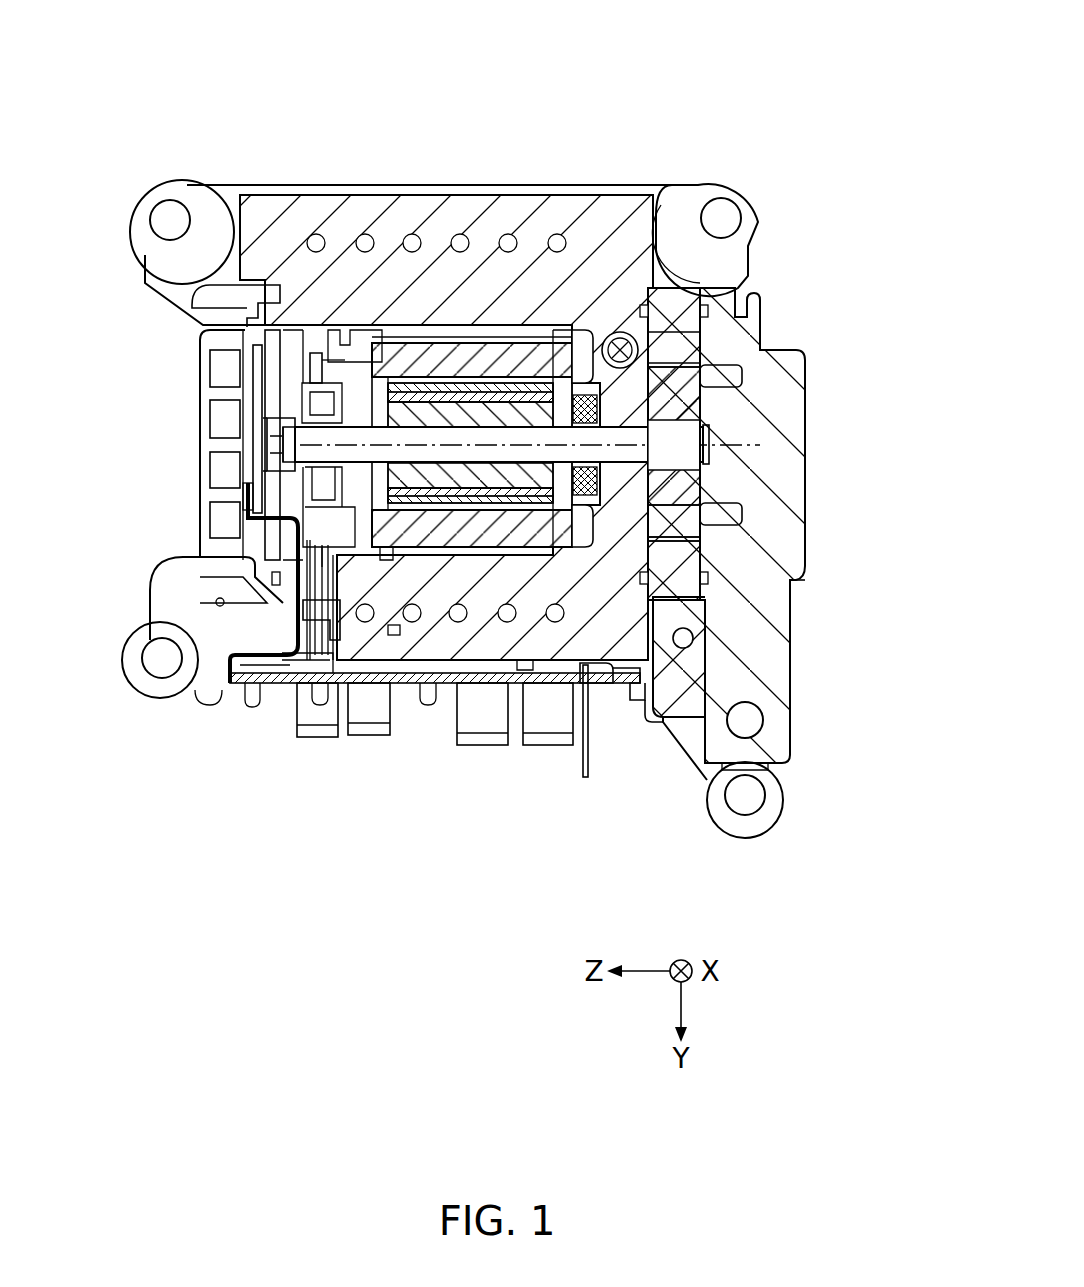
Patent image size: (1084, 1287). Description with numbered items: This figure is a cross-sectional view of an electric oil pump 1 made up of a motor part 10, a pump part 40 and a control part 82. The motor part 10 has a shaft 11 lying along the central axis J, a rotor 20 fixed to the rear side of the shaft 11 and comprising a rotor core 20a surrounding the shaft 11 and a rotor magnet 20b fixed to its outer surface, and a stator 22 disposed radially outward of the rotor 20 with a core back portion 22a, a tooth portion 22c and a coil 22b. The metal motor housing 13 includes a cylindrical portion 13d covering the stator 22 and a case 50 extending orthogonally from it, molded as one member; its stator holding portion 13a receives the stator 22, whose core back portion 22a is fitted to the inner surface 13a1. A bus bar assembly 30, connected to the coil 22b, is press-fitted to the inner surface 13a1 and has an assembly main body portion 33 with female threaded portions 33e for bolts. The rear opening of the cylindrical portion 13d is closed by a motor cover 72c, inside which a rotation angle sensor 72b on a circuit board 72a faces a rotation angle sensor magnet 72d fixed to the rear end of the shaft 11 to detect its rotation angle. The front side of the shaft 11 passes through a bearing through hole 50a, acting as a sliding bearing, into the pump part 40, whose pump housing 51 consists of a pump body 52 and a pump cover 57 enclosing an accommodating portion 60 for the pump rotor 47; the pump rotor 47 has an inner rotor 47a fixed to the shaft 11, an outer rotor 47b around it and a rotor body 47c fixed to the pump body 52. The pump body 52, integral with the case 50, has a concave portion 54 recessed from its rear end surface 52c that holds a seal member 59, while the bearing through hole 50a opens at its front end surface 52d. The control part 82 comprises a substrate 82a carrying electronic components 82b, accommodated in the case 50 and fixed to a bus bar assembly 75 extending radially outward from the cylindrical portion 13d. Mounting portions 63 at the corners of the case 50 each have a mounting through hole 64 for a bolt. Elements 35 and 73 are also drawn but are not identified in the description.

The electric oil pump 1 is at (698, 106).
The motor part 10 is at (540, 312).
The shaft 11 is at (700, 433).
The motor housing 13 is at (280, 180).
The stator holding portion 13a is at (490, 663).
The inner surface 13a1 is at (532, 700).
The cylindrical portion 13d is at (455, 330).
The rotor 20 is at (418, 368).
The rotor core 20a is at (437, 398).
The rotor magnet 20b is at (507, 312).
The stator 22 is at (563, 322).
The core back portion 22a is at (395, 632).
The coil 22b is at (352, 330).
The tooth portion 22c is at (452, 688).
The bus bar assembly 30 is at (312, 325).
The assembly main body portion 33 is at (296, 510).
The female threaded portion 33e is at (310, 528).
The terminal 35 is at (300, 370).
The pump part 40 is at (754, 522).
The pump rotor 47 is at (705, 415).
The inner rotor 47a is at (690, 515).
The outer rotor 47b is at (690, 535).
The rotor body 47c is at (695, 590).
The case 50 is at (627, 215).
The bearing through hole 50a is at (650, 433).
The pump housing 51 is at (788, 673).
The pump body 52 is at (693, 678).
The end surface 52c is at (595, 683).
The front end surface 52d is at (690, 565).
The concave portion 54 is at (620, 345).
The pump cover 57 is at (780, 635).
The seal member 59 is at (755, 300).
The accommodating portion 60 is at (648, 700).
The mounting portion 63 is at (148, 198).
The mounting through hole 64 is at (170, 203).
The circuit board 72a is at (260, 408).
The rotation angle sensor 72b is at (278, 440).
The motor cover 72c is at (205, 492).
The rotation angle sensor magnet 72d is at (277, 450).
The connector 73 is at (315, 640).
The bus bar assembly 75 is at (295, 652).
The control part 82 is at (422, 760).
The substrate 82a is at (400, 690).
The electronic components 82b is at (318, 690).
The central axis J is at (700, 455).